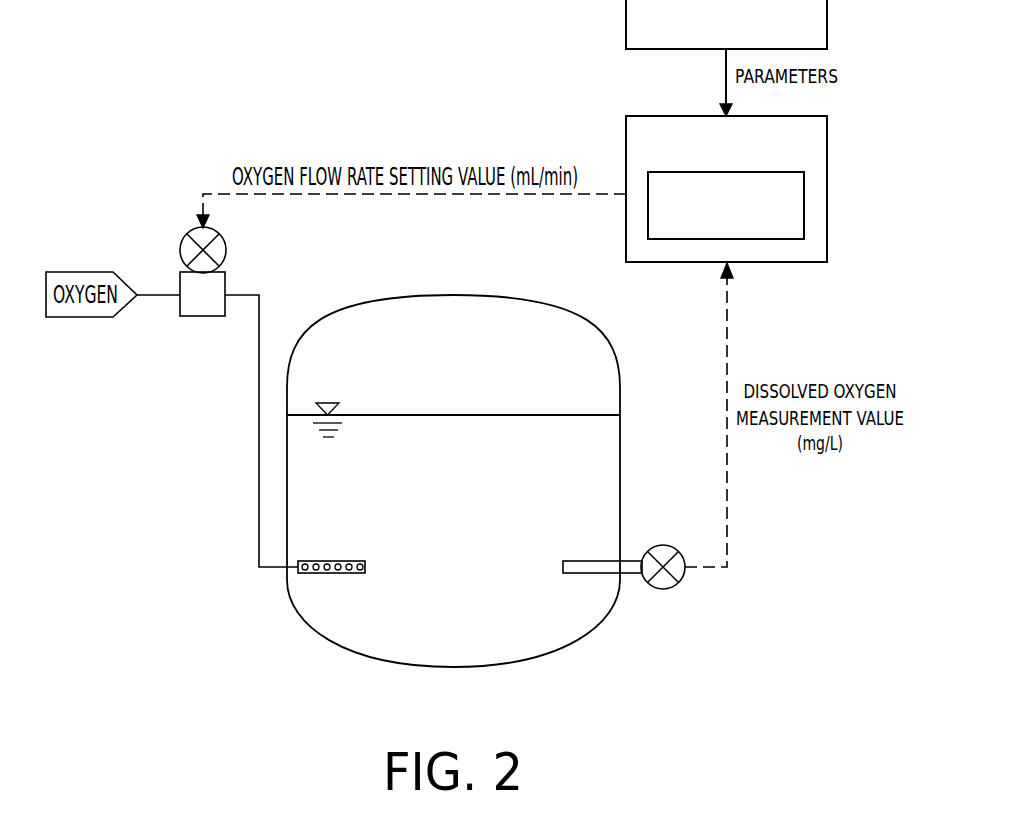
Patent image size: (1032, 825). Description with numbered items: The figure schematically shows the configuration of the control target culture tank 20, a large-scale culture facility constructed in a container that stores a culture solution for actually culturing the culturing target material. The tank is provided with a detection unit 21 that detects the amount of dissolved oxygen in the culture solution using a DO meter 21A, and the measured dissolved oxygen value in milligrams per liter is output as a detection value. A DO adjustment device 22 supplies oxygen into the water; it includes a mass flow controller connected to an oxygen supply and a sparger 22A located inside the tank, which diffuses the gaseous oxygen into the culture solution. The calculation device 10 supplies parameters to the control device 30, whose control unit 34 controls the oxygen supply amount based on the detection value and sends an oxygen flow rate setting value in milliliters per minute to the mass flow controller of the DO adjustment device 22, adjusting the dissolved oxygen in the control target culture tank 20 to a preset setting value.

The calculation device 10 is at (827, 16).
The control device 30 is at (827, 148).
The control unit 34 is at (804, 207).
The DO adjustment device 22 is at (205, 316).
The sparger 22A is at (332, 573).
The control target culture tank 20 is at (578, 608).
The detection unit 21 is at (636, 565).
The DO meter 21A is at (603, 557).